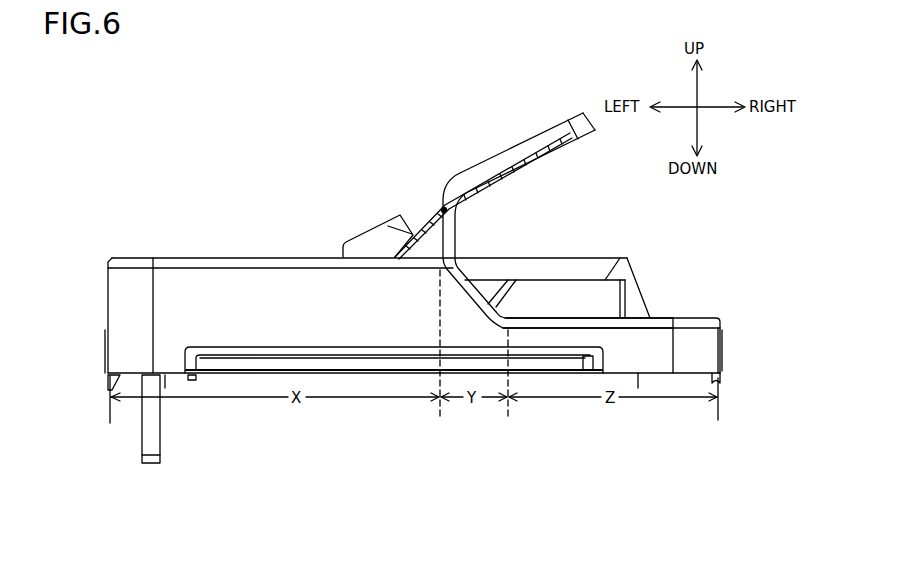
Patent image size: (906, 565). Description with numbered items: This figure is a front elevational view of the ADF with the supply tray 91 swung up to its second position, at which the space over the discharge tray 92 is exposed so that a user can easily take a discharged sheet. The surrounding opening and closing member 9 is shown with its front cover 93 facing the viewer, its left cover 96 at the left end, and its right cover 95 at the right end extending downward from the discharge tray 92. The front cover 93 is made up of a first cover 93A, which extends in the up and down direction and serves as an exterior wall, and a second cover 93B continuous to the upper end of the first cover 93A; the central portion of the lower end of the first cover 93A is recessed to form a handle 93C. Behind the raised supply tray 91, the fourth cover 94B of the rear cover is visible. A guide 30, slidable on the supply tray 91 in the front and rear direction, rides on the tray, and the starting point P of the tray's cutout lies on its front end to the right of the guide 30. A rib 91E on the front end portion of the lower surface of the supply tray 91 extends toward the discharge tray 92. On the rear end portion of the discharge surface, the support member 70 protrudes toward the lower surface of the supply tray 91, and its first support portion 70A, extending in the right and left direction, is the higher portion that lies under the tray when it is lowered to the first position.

The opening and closing member 9 is at (106, 232).
The front cover 93 is at (238, 288).
The second cover 93B is at (270, 267).
The first cover 93A is at (272, 330).
The handle 93C is at (520, 357).
The left cover 96 is at (100, 320).
The guide 30 is at (365, 243).
The supply tray 91 is at (532, 138).
The rib 91E is at (430, 243).
The starting point P is at (446, 204).
The support member 70 is at (556, 296).
The fourth cover 94B is at (587, 255).
The first support portion 70A is at (607, 275).
The discharge tray 92 is at (667, 315).
The right cover 95 is at (733, 355).